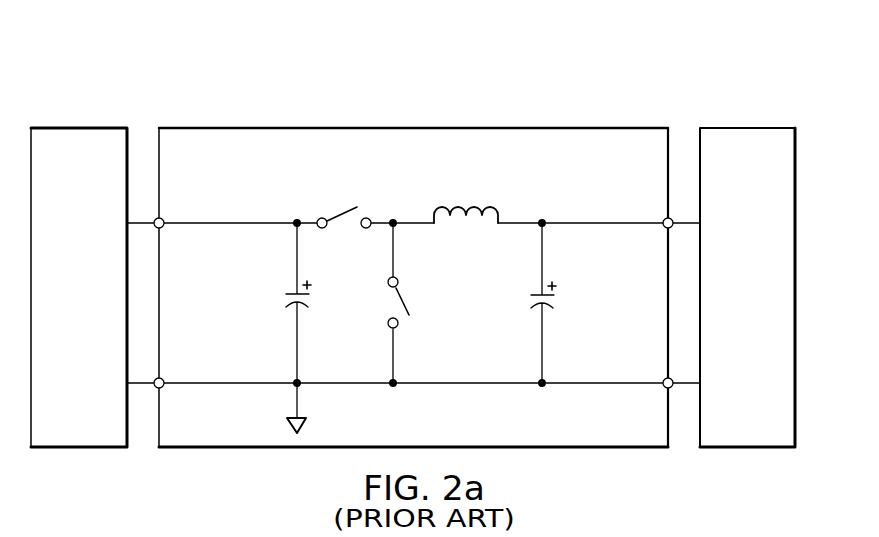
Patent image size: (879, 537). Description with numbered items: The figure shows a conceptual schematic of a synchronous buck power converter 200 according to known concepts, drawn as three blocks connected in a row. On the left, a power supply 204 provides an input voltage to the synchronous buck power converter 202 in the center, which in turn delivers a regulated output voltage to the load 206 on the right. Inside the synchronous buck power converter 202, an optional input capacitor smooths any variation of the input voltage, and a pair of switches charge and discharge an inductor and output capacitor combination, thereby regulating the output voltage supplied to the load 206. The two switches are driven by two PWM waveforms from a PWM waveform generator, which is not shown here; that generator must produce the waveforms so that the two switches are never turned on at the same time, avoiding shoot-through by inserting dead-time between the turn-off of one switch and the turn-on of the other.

The conceptual schematics of a synchronous buck power converter along with waveforms 200 is at (553, 45).
The synchronous buck power converter 202 is at (348, 127).
The power supply 204 is at (79, 127).
The load 206 is at (748, 125).